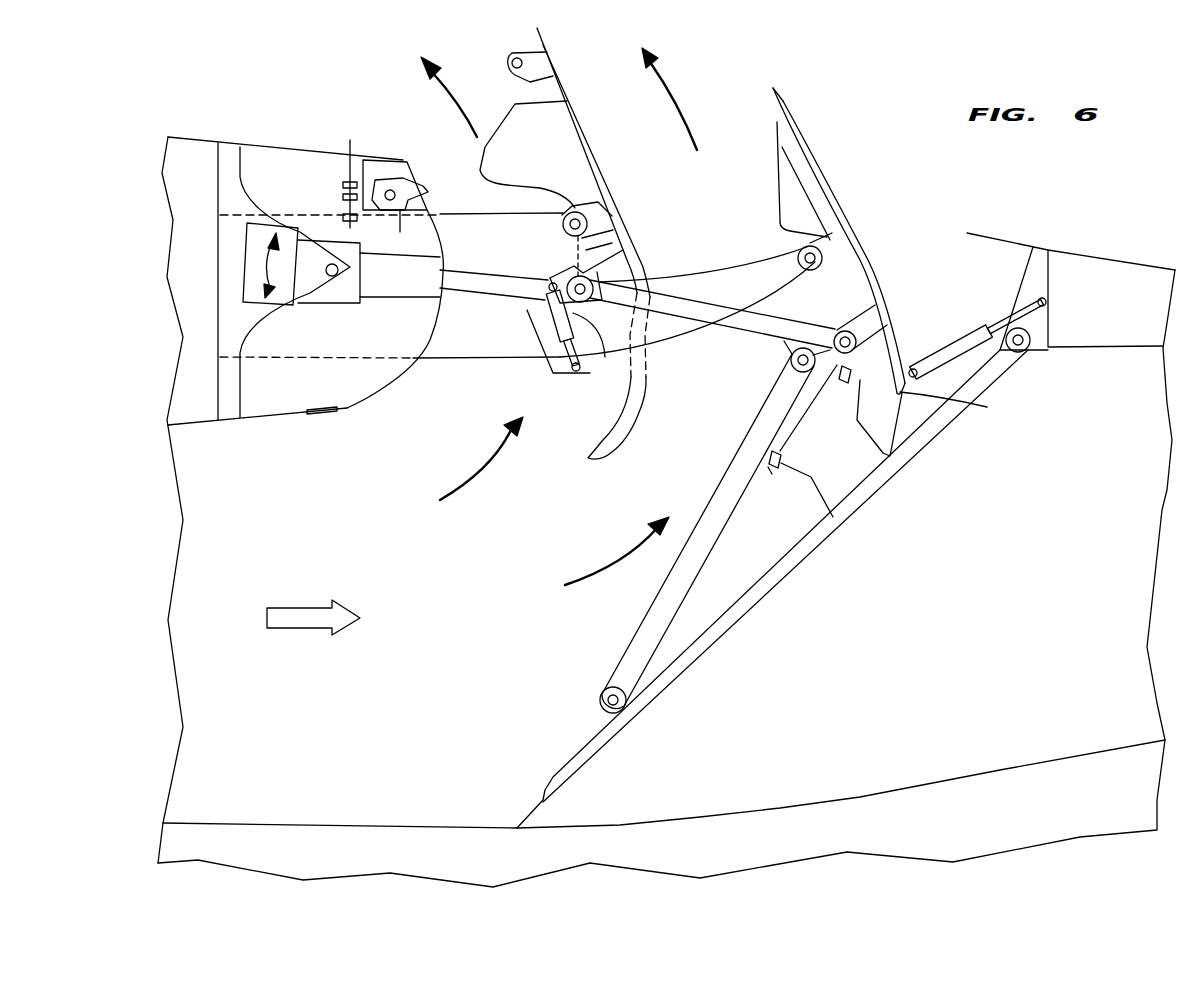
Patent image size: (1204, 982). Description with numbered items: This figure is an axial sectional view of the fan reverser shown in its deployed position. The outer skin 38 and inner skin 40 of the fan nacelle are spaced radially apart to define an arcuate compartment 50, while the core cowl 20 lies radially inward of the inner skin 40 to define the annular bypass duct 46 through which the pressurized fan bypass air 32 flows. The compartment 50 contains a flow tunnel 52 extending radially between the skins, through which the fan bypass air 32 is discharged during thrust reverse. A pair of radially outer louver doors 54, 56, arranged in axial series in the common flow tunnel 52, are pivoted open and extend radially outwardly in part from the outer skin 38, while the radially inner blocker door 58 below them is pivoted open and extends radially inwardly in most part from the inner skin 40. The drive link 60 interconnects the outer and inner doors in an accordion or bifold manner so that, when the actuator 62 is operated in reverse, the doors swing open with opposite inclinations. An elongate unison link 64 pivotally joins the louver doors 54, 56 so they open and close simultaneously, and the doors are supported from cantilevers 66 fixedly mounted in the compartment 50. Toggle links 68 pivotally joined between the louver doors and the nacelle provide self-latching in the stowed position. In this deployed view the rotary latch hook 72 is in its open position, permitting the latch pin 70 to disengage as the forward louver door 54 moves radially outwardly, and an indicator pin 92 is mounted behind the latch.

The core cowl 20 is at (1046, 810).
The fan bypass air 32 is at (298, 608).
The outer skin 38 is at (1080, 252).
The inner skin 40 is at (1090, 350).
The bypass duct 46 is at (339, 732).
The compartment 50 is at (185, 282).
The flow tunnel 52 is at (664, 260).
The forward louver door 54 is at (592, 147).
The aft louver door 56 is at (820, 173).
The blocker door 58 is at (823, 540).
The drive link 60 is at (737, 504).
The actuator 62 is at (398, 297).
The unison link 64 is at (753, 338).
The cantilevers 66 is at (493, 248).
The toggle link 68 is at (590, 352).
The latch pin 70 is at (512, 58).
The latch hook 72 is at (393, 175).
The indicator pin 92 is at (345, 140).